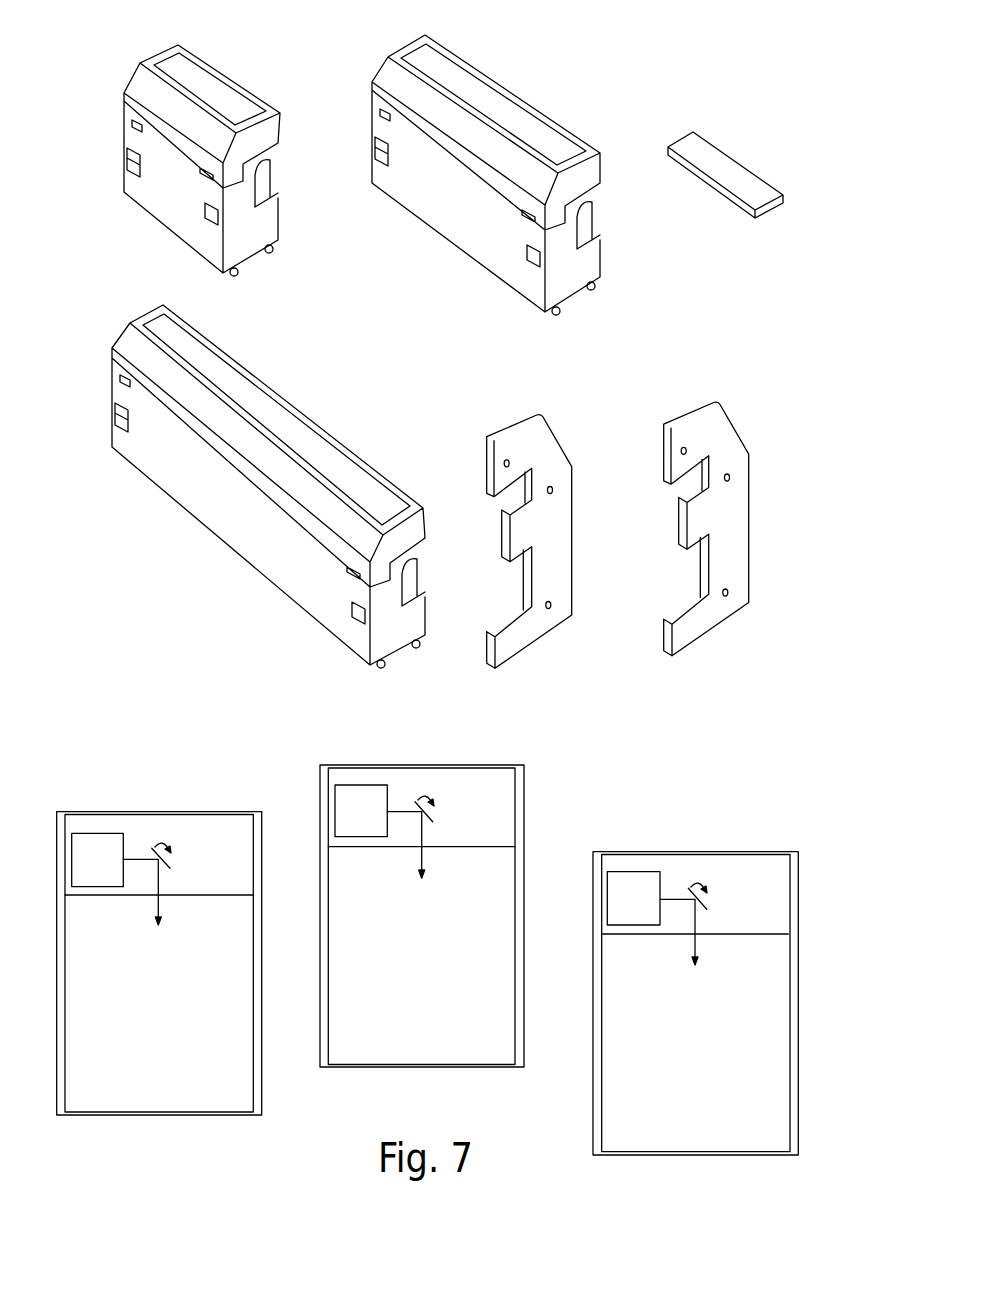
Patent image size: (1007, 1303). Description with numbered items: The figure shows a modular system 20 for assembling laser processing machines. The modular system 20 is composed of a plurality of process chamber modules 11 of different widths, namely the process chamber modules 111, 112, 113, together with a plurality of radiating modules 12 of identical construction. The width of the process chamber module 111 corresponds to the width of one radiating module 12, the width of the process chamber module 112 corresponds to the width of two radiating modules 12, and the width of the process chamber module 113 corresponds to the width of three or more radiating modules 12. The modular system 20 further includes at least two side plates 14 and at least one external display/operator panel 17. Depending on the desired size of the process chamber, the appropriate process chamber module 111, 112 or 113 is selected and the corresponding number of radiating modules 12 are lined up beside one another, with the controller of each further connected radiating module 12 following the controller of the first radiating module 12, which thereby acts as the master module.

The process chamber module 11 is at (322, 344).
The process chamber module 111 is at (106, 80).
The process chamber module 112 is at (351, 70).
The process chamber module 113 is at (106, 322).
The modular system 20 is at (545, 95).
The external display/operator panel 17 is at (703, 155).
The side plate 14 is at (535, 453).
The radiating module 12 is at (100, 798).